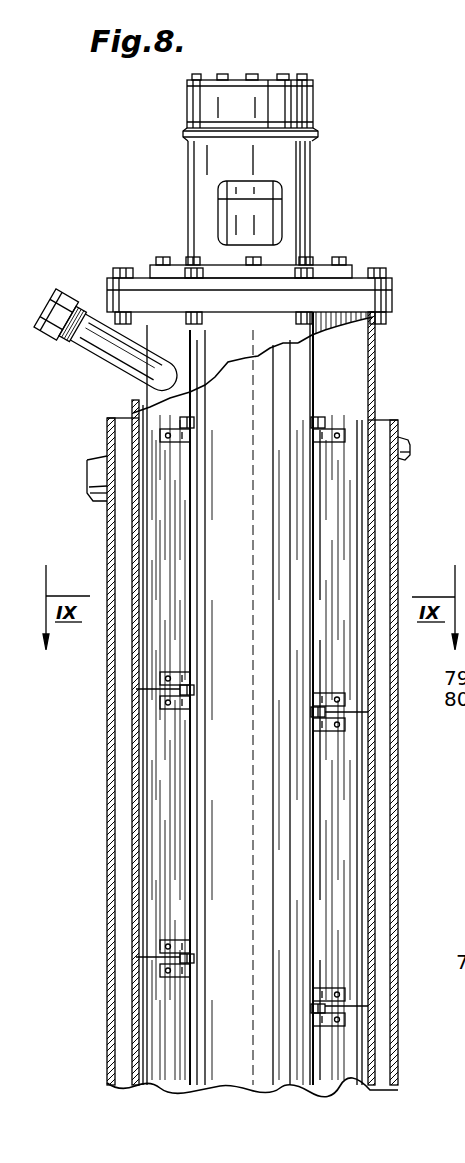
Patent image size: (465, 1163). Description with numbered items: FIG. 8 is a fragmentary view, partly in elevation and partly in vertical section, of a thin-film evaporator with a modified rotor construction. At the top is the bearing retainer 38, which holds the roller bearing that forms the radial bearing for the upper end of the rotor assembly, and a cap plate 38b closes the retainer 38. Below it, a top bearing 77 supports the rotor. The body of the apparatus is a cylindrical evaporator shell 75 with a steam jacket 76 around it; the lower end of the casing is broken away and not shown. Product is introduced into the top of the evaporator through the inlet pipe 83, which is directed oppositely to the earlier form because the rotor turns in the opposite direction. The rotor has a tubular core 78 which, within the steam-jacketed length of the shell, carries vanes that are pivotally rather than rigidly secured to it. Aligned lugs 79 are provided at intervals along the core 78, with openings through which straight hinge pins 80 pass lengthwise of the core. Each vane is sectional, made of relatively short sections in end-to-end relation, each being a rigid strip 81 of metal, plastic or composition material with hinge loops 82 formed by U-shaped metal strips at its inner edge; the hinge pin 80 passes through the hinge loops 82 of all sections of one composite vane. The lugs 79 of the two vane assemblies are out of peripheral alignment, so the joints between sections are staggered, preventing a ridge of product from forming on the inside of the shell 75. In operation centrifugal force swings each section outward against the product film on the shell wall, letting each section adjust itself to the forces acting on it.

The bearing retainer 38 is at (313, 108).
The cap plate 38b is at (268, 80).
The cylindrical evaporator shell 75 is at (376, 381).
The steam jacket 76 is at (398, 510).
The top bearing 77 is at (315, 213).
The tubular core 78 is at (307, 387).
The lugs 79 is at (194, 423).
The hinge pins 80 is at (190, 584).
The strip 81 is at (140, 553).
The hinge loops 82 is at (192, 438).
The inlet pipe 83 is at (75, 293).